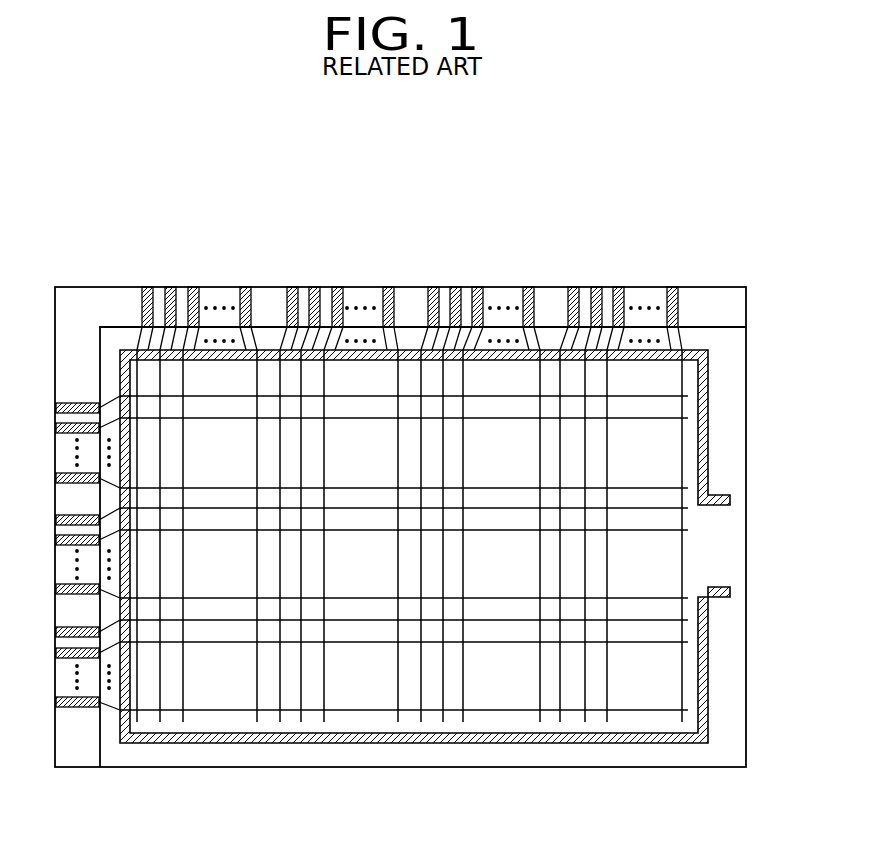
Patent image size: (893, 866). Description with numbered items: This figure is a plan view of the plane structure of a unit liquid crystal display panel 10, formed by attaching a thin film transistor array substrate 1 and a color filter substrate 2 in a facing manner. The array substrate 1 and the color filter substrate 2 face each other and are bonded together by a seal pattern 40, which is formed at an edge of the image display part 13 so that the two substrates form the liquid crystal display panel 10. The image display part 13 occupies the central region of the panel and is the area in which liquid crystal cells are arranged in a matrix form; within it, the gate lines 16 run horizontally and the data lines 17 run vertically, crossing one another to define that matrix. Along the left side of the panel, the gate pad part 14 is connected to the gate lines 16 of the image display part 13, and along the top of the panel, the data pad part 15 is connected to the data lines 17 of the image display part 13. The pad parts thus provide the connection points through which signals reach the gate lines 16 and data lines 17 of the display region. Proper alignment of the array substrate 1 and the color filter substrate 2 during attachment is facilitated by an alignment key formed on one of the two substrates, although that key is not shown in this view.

The liquid crystal display panel 10 is at (84, 272).
The array substrate 1 is at (735, 307).
The color filter substrate 2 is at (735, 363).
The seal pattern 40 is at (707, 427).
The data pad part 15 is at (677, 279).
The gate pad part 14 is at (47, 400).
The image display part 13 is at (378, 465).
The data lines 17 is at (682, 659).
The gate lines 16 is at (653, 710).